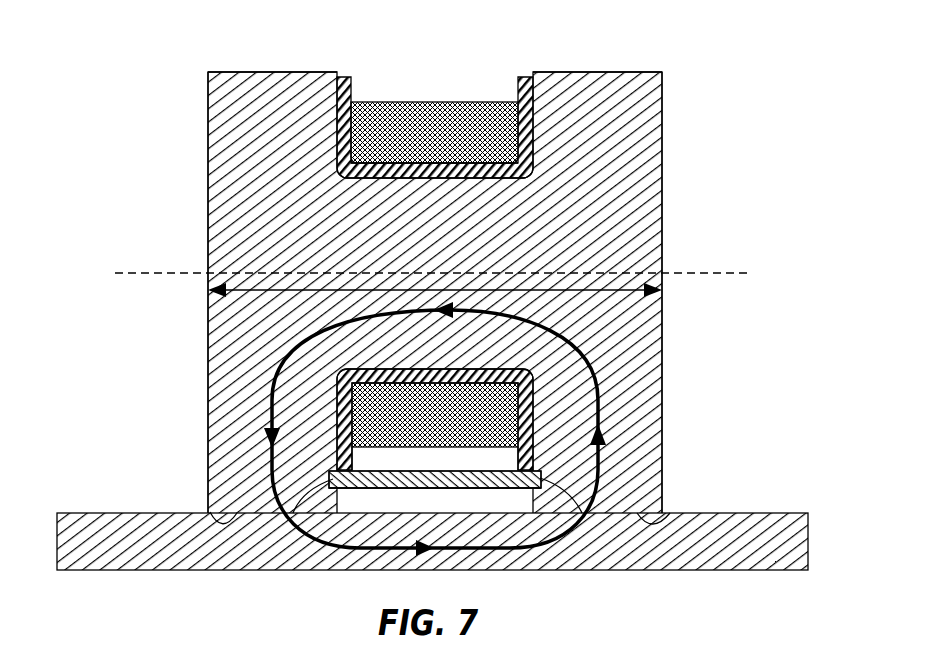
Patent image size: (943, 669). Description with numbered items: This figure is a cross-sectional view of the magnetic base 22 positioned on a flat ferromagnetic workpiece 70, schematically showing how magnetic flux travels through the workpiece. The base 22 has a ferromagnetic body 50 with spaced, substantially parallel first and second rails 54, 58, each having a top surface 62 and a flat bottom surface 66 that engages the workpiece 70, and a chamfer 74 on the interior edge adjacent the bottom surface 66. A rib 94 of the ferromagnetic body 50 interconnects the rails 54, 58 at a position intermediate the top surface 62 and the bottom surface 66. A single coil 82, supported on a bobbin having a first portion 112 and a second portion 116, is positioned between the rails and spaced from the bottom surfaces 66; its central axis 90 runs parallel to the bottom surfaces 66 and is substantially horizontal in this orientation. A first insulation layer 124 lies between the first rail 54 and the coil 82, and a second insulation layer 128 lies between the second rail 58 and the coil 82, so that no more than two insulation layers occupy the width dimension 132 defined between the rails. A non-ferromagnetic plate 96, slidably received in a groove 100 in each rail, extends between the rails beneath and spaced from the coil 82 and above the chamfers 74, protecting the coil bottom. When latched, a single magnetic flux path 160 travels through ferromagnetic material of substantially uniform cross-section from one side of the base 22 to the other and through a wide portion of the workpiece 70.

The magnetic base 22 is at (104, 119).
The ferromagnetic body 50 is at (235, 127).
The first rail 54 is at (232, 182).
The second rail 58 is at (633, 173).
The top surface 62 is at (262, 71).
The second portion 116 is at (349, 94).
The coil 82 is at (443, 107).
The rib 94 is at (480, 212).
The central axis 90 is at (698, 272).
The width dimension 132 is at (262, 292).
The magnetic flux path 160 is at (600, 356).
The first insulation layer 124 is at (343, 405).
The second insulation layer 128 is at (533, 406).
The first portion 112 is at (343, 457).
The chamfer 74 is at (338, 490).
The non-ferromagnetic plate 96 is at (496, 486).
The groove 100 is at (298, 514).
The ferromagnetic workpiece 70 is at (125, 553).
The bottom surface 66 is at (210, 512).